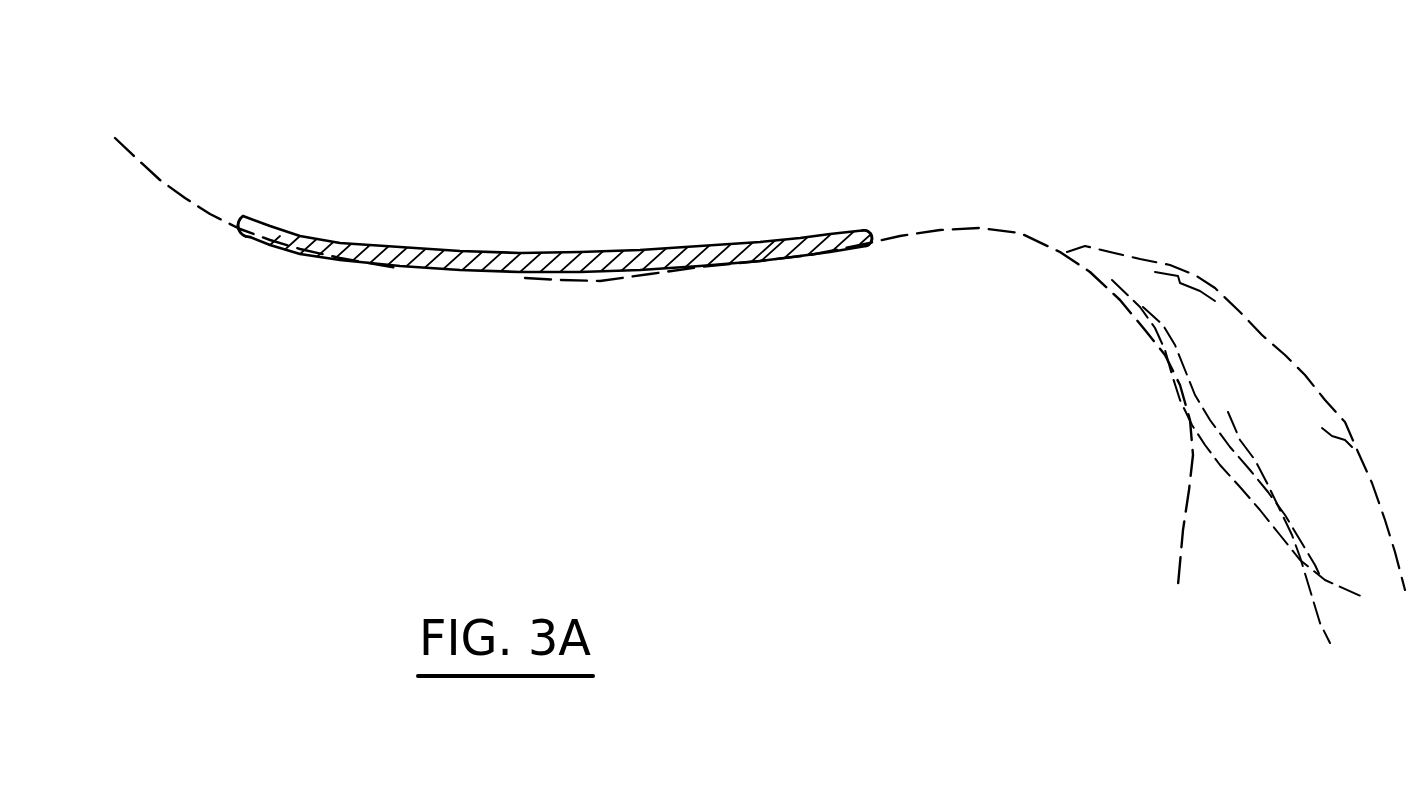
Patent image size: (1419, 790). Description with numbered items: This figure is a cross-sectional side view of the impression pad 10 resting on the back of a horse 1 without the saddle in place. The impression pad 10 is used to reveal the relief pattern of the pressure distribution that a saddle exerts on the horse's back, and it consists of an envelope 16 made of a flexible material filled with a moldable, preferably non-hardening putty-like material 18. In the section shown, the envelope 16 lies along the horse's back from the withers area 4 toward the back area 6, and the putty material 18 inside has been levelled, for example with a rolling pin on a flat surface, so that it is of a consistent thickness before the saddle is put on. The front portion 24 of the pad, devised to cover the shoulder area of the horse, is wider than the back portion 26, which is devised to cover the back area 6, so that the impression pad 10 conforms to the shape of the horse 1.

The horse 1 is at (150, 203).
The withers area 4 is at (185, 240).
The back area 6 is at (603, 296).
The impression pad 10 is at (560, 173).
The envelope 16 is at (560, 194).
The moldable putty-like material 18 is at (541, 262).
The front portion 24 is at (262, 226).
The back portion 26 is at (828, 232).